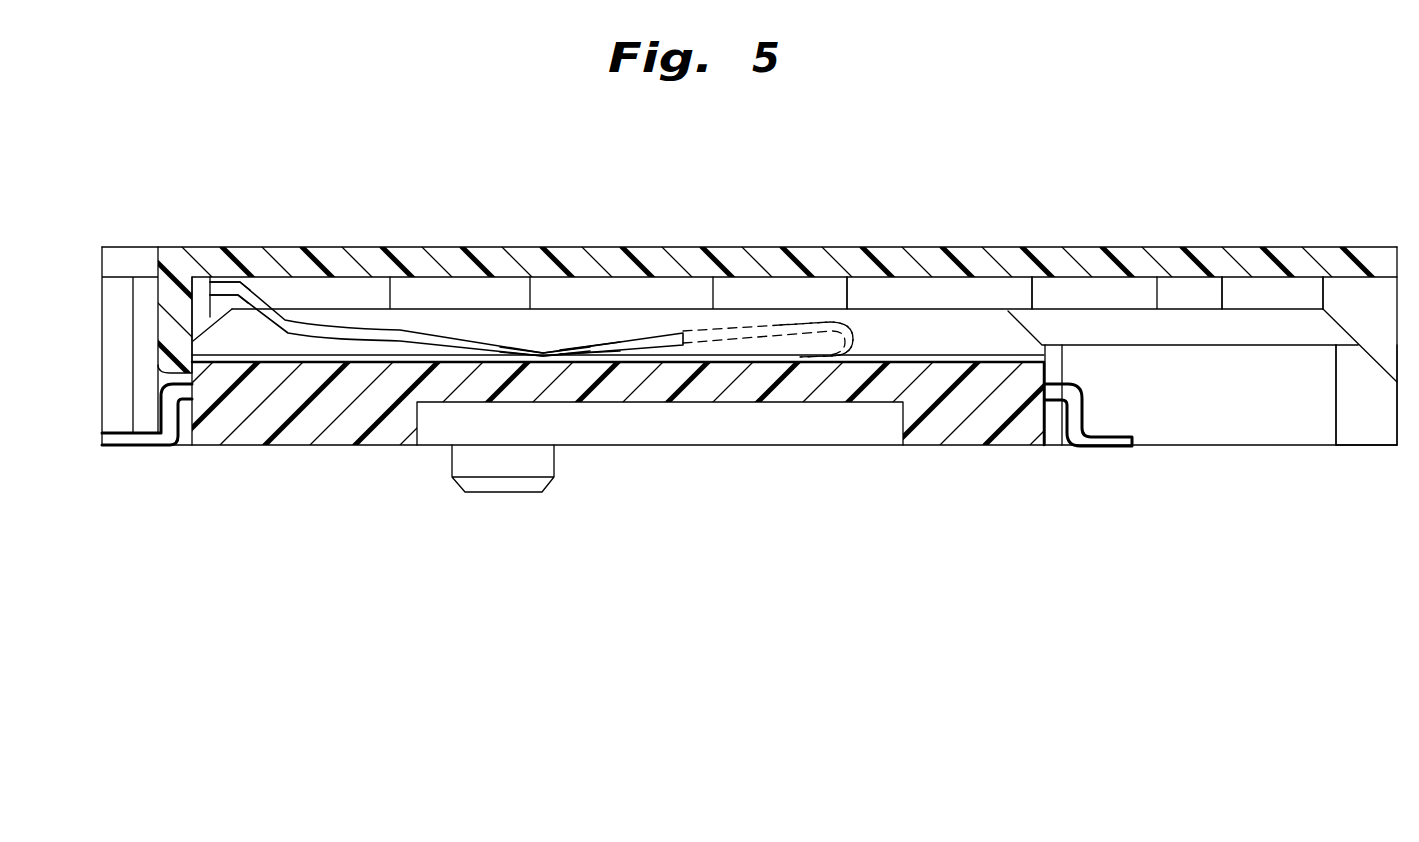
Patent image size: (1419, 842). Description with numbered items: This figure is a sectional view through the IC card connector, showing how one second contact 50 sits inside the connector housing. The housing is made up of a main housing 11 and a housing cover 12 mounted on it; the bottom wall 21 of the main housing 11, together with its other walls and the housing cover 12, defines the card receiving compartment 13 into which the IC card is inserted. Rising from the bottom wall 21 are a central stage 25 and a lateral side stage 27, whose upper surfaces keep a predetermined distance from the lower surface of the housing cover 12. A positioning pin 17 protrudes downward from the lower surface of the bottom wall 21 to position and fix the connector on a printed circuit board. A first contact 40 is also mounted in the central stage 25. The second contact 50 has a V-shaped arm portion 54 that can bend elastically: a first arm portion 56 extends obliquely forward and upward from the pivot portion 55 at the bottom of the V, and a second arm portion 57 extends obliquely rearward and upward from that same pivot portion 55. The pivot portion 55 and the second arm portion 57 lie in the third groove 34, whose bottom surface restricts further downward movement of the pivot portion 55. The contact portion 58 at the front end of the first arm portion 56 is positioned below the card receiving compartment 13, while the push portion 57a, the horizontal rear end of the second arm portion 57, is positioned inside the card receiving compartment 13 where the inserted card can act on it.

The main housing 11 is at (1226, 455).
The housing cover 12 is at (1208, 240).
The card receiving compartment 13 is at (351, 292).
The positioning pin 17 is at (487, 493).
The bottom wall 21 is at (1305, 436).
The central stage 25 is at (949, 301).
The lateral side stage 27 is at (1283, 309).
The third groove 34 is at (975, 334).
The first contact 40 is at (123, 455).
The second contact 50 is at (1115, 456).
The V-shaped arm portion 54 is at (603, 322).
The pivot portion 55 is at (537, 343).
The first arm portion 56 is at (748, 323).
The second arm portion 57 is at (426, 328).
The push portion 57a is at (237, 283).
The contact portion 58 is at (830, 321).